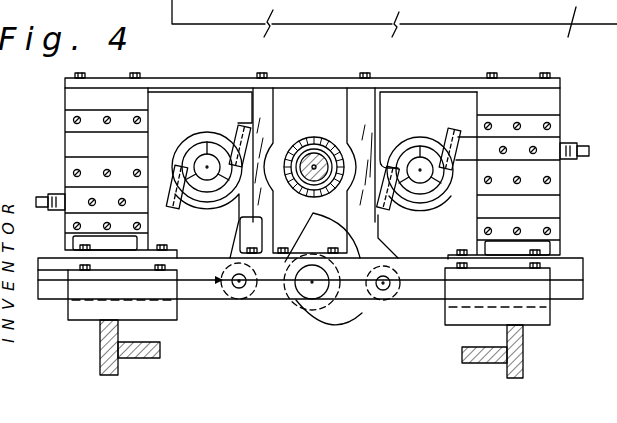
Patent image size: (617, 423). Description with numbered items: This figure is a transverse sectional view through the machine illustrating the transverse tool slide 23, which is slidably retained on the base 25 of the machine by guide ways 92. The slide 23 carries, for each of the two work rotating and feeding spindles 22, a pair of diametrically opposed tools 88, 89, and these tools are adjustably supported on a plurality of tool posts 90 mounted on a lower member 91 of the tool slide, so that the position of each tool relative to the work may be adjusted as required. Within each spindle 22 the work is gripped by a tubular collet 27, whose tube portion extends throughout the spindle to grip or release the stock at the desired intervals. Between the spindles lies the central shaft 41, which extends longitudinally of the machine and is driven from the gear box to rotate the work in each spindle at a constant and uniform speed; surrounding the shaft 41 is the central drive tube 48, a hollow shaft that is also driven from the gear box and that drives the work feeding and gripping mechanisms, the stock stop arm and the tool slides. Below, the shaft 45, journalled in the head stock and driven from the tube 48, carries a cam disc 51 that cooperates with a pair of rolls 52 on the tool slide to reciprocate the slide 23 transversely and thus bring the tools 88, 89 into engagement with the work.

The transverse tool slide 23 is at (50, 115).
The base 25 is at (394, 28).
The tool posts 90 is at (72, 147).
The work rotating and feeding spindles 22 is at (198, 212).
The tubular collet 27 is at (197, 147).
The tool 88 is at (178, 170).
The tool 89 is at (236, 129).
The central drive tube 48 is at (317, 146).
The central shaft 41 is at (311, 186).
The lower member 91 is at (202, 293).
The guide ways 92 is at (72, 304).
The rolls 52 is at (245, 302).
The shaft 45 is at (289, 302).
The cam disc 51 is at (333, 322).